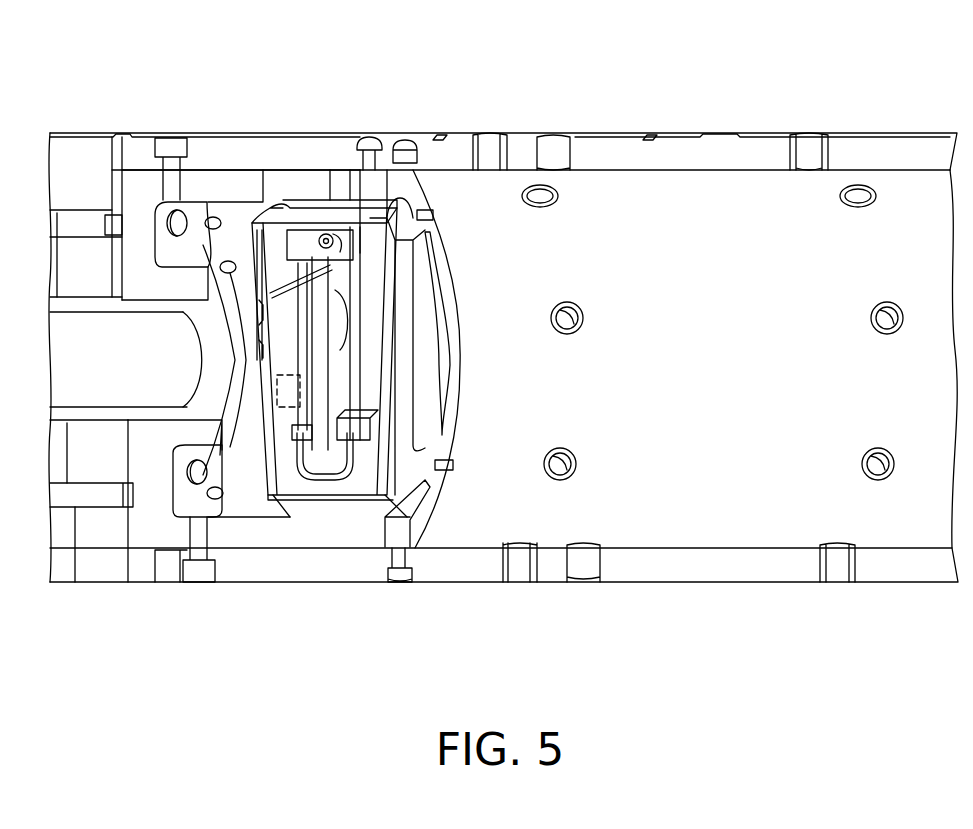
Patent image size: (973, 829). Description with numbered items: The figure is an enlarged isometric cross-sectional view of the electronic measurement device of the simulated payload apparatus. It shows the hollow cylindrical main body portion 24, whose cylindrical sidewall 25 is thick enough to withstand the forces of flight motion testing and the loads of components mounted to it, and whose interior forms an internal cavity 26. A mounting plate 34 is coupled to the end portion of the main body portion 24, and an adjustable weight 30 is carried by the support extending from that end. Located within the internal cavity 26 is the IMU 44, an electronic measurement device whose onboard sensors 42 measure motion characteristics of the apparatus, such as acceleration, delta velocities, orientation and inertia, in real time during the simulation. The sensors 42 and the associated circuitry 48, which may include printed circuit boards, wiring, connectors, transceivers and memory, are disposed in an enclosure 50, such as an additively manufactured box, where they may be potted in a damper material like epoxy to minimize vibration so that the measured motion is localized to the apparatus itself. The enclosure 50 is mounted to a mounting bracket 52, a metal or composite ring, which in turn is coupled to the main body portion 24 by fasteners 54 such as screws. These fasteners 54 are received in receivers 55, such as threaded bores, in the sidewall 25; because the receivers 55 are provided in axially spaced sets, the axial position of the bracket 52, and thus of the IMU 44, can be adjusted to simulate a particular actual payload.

The main body portion 24 is at (863, 126).
The cylindrical sidewall 25 is at (768, 158).
The internal cavity 26 is at (717, 505).
The adjustable weights 30 is at (77, 165).
The mounting plates 34 is at (220, 185).
The onboard sensors 42 is at (285, 407).
The IMU 44 is at (264, 292).
The circuitry 48 is at (321, 465).
The enclosure 50 is at (322, 203).
The mounting bracket 52 is at (427, 192).
The fasteners 54 is at (367, 137).
The receivers 55 is at (490, 148).